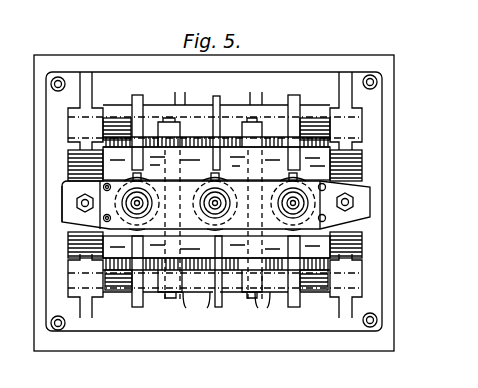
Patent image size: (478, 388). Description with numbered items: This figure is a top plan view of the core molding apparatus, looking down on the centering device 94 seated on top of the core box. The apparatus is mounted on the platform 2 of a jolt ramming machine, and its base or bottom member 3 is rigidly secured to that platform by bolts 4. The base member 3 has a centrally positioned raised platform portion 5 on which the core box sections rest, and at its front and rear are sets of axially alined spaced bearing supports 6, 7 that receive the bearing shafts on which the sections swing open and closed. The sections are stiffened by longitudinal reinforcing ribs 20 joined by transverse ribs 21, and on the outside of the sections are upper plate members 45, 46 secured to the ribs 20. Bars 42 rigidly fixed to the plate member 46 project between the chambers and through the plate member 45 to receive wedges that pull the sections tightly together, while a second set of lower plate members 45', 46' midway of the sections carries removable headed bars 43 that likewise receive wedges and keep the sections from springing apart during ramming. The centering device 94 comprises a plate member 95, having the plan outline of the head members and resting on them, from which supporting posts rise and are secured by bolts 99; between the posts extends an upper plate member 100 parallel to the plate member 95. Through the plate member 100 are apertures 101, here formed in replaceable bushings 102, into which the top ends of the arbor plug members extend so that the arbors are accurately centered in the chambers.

The platform 2 is at (186, 346).
The base or bottom member 3 is at (328, 326).
The bolts 4 is at (51, 84).
The raised platform portion 5 is at (362, 239).
The bearing supports 6 is at (68, 269).
The bearing supports 7 is at (68, 118).
The longitudinal reinforcing ribs 20 is at (137, 105).
The transverse ribs 21 is at (68, 170).
The bars 42 is at (166, 122).
The bars 43 is at (166, 290).
The plate member 45 is at (116, 300).
The plate member 45' is at (300, 300).
The plate member 46 is at (213, 112).
The plate member 46' is at (316, 111).
The centering device 94 is at (372, 190).
The plate member 95 is at (70, 213).
The bolts 99 is at (358, 175).
The plate member 100 is at (330, 209).
The apertures 101 is at (134, 205).
The bushings 102 is at (118, 198).